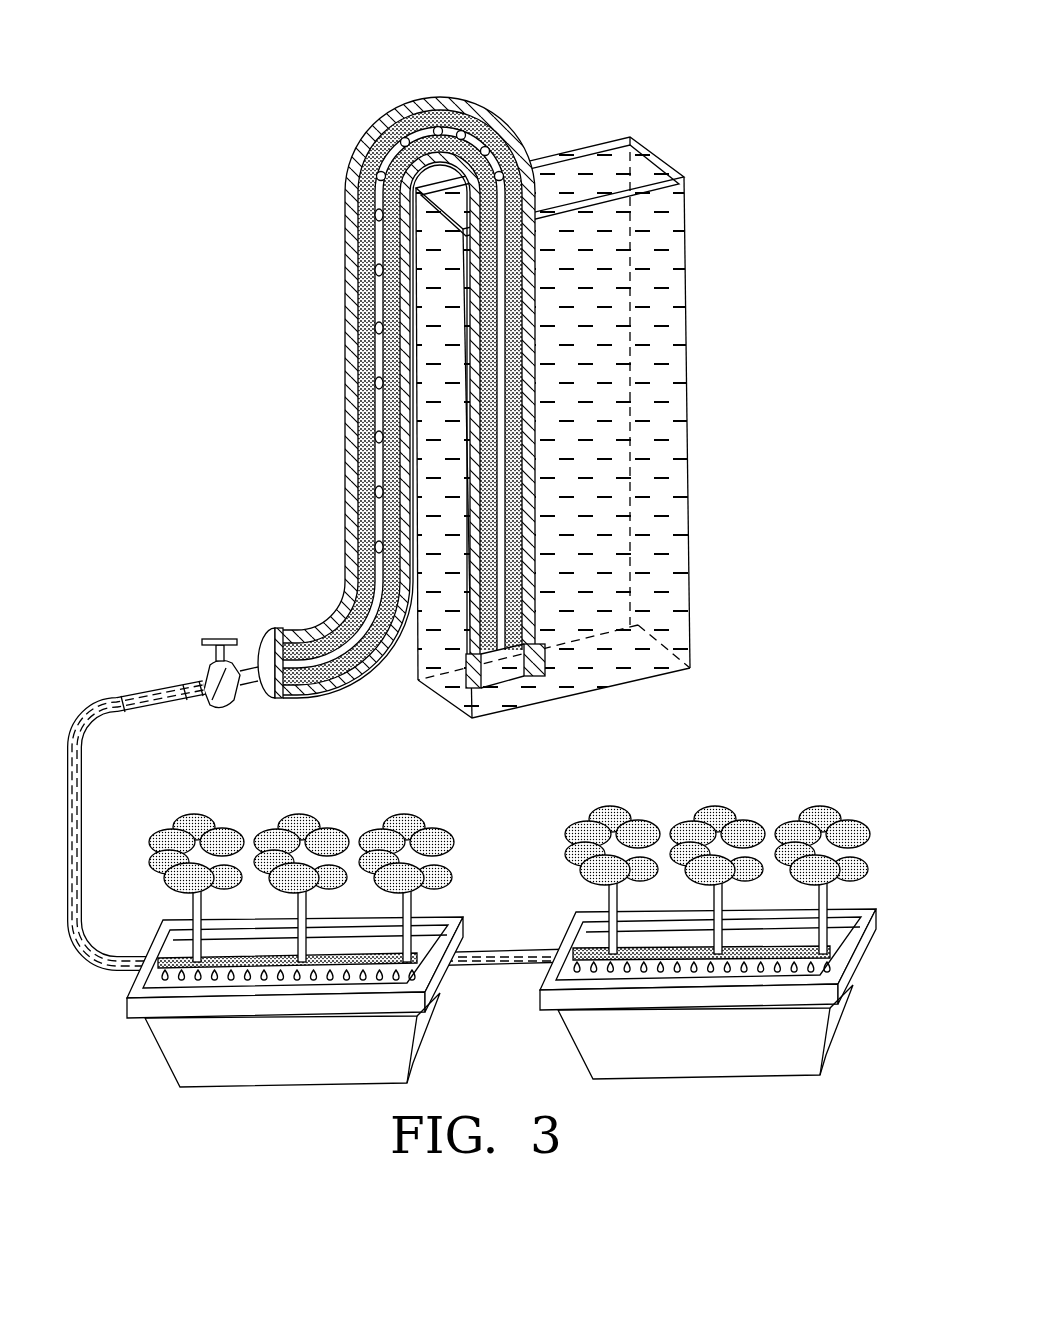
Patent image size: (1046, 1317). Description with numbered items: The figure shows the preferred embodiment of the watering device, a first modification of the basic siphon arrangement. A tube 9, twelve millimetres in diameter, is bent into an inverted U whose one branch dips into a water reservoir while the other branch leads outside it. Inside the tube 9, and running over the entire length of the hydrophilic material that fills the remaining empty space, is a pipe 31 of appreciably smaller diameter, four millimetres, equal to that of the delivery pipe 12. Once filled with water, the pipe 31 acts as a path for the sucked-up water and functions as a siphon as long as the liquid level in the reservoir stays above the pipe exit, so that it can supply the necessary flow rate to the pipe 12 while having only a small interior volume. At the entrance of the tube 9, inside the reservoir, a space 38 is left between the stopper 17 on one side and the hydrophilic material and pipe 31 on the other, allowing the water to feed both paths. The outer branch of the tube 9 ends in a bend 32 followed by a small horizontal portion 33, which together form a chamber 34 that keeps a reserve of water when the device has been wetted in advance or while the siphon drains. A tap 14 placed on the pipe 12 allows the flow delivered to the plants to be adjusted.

The tube 9 is at (370, 118).
The pipe 31 is at (348, 272).
The bend 32 is at (334, 590).
The small horizontal portion 33 is at (295, 610).
The chamber 34 is at (292, 638).
The tap 14 is at (215, 626).
The pipe 12 is at (158, 670).
The space 38 is at (540, 643).
The stopper 17 is at (550, 672).